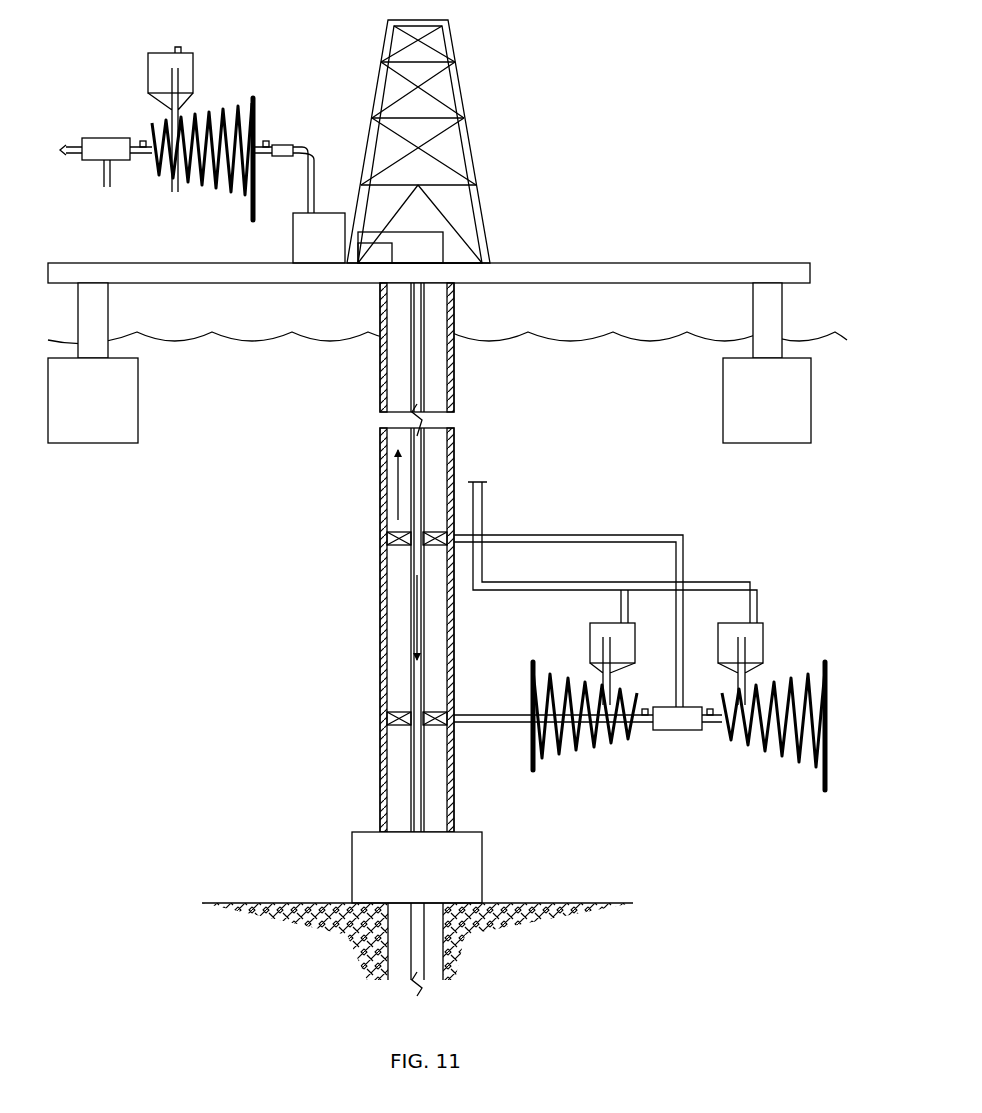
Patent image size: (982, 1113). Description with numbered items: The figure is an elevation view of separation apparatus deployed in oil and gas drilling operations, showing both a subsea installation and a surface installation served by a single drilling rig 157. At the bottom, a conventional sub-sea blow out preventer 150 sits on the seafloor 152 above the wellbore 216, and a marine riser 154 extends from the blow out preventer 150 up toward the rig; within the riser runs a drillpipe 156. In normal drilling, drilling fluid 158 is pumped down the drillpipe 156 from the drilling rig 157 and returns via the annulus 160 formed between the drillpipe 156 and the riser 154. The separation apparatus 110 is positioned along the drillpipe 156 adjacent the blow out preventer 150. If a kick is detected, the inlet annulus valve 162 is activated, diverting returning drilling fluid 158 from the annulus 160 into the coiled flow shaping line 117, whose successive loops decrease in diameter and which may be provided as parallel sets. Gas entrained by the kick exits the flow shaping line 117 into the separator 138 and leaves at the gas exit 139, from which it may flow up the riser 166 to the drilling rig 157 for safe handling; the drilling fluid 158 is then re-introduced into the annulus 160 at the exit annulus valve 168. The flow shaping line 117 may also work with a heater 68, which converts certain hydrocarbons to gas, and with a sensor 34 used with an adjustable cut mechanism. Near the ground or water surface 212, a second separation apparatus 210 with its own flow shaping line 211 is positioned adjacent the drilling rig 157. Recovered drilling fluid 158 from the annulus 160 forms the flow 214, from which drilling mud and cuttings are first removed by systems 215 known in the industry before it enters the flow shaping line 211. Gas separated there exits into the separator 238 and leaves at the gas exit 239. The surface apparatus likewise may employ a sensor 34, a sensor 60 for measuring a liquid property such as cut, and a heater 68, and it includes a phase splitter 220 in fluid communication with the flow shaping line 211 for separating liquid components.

The separation apparatus 110 is at (725, 530).
The flow shaping line 117 is at (553, 760).
The separator 138 is at (590, 637).
The gas exit 139 is at (621, 612).
The blow out preventer 150 is at (482, 870).
The seafloor 152 is at (245, 903).
The marine riser 154 is at (380, 398).
The drillpipe 156 is at (423, 382).
The drilling rig 157 is at (462, 85).
The drilling fluid 158 is at (415, 378).
The annulus 160 is at (398, 782).
The inlet annulus valve 162 is at (393, 712).
The riser 166 is at (482, 505).
The exit annulus valve 168 is at (393, 532).
The separation apparatus 210 is at (258, 68).
The flow shaping line 211 is at (195, 185).
The ground or water surface 212 is at (118, 263).
The flow 214 is at (398, 470).
The systems 215 is at (292, 237).
The wellbore 216 is at (455, 950).
The phase splitter 220 is at (95, 138).
The separator 238 is at (148, 62).
The gas exit 239 is at (181, 47).
The sensor 34 is at (266, 141).
The sensor 60 is at (143, 141).
The heater 68 is at (291, 145).